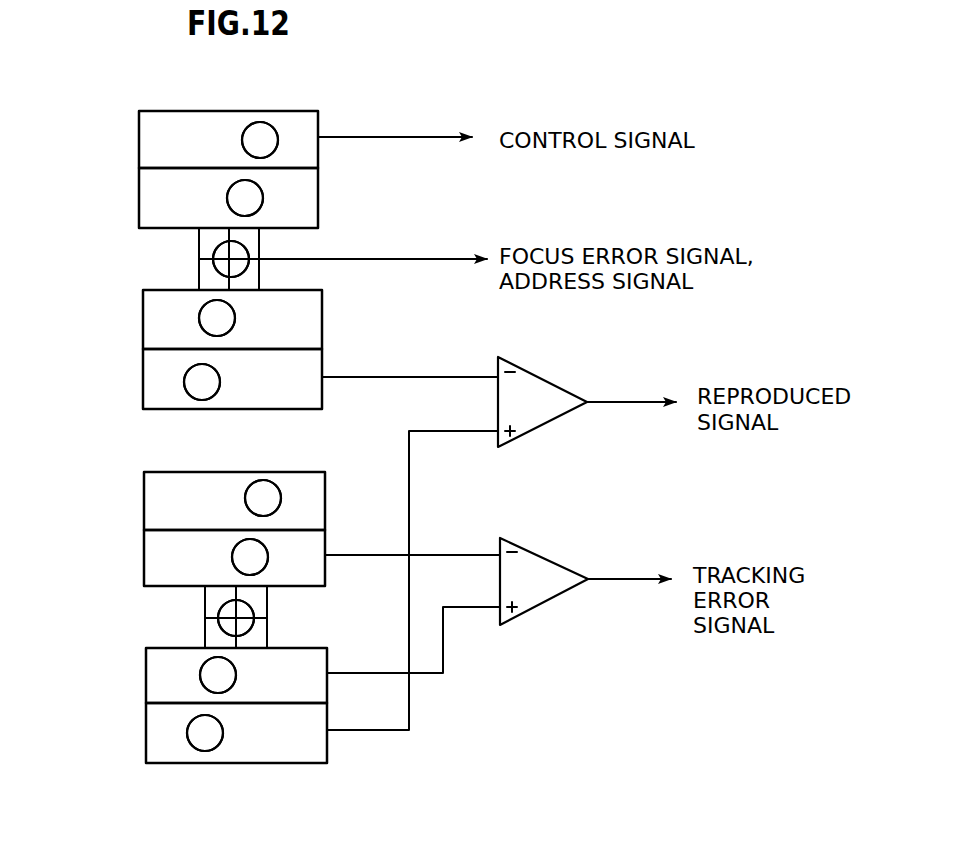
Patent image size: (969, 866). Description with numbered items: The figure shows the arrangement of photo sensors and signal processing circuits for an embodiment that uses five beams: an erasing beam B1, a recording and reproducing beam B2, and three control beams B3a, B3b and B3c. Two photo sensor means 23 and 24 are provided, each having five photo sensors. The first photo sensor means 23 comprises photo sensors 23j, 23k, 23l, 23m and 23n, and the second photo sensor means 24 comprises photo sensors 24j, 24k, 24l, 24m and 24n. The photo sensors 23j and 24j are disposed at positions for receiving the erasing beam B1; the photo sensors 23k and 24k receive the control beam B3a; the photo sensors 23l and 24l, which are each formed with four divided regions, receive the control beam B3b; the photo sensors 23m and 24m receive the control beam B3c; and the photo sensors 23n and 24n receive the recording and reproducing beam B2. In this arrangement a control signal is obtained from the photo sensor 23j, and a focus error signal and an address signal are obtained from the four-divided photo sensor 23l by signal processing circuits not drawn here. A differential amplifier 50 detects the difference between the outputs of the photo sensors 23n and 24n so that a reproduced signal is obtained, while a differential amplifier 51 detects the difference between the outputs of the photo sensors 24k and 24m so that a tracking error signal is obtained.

The photo sensor means 23 is at (63, 113).
The photo sensor 23j is at (139, 146).
The photo sensor 23k is at (141, 197).
The photo sensor 23l is at (199, 250).
The photo sensor 23m is at (143, 318).
The photo sensor 23n is at (143, 371).
The photo sensor means 24 is at (67, 465).
The photo sensor 24j is at (150, 502).
The photo sensor 24k is at (156, 555).
The photo sensor 24l is at (210, 627).
The photo sensor 24m is at (170, 684).
The photo sensor 24n is at (158, 729).
The erasing beam B1 is at (267, 133).
The recording and reproducing beam B2 is at (212, 390).
The control beam B3a is at (259, 195).
The control beam B3b is at (238, 249).
The control beam B3c is at (233, 316).
The differential amplifier 50 is at (567, 398).
The differential amplifier 51 is at (556, 590).